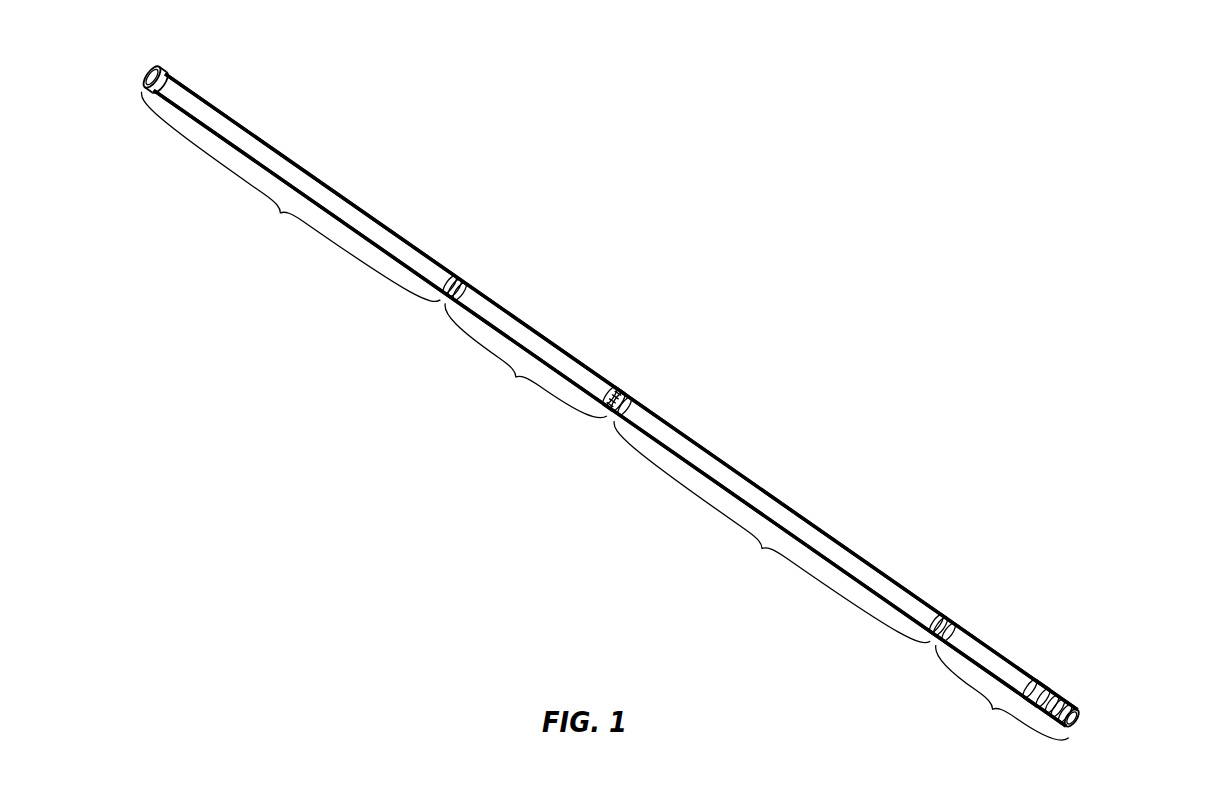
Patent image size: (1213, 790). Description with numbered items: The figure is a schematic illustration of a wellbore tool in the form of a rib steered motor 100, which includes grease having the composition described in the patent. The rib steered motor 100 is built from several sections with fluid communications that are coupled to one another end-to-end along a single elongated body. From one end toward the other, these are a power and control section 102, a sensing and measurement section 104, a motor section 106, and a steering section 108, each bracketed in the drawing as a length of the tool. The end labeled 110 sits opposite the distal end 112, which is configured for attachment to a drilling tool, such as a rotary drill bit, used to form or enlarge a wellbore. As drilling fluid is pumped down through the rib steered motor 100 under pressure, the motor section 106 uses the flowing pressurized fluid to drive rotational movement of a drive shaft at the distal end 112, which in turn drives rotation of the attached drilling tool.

The rib steered motor 100 is at (605, 395).
The power and control section 102 is at (283, 208).
The sensing and measurement section 104 is at (516, 370).
The motor section 106 is at (759, 540).
The steering section 108 is at (989, 700).
The proximal end cap 110 is at (145, 62).
The distal end 112 is at (1090, 732).